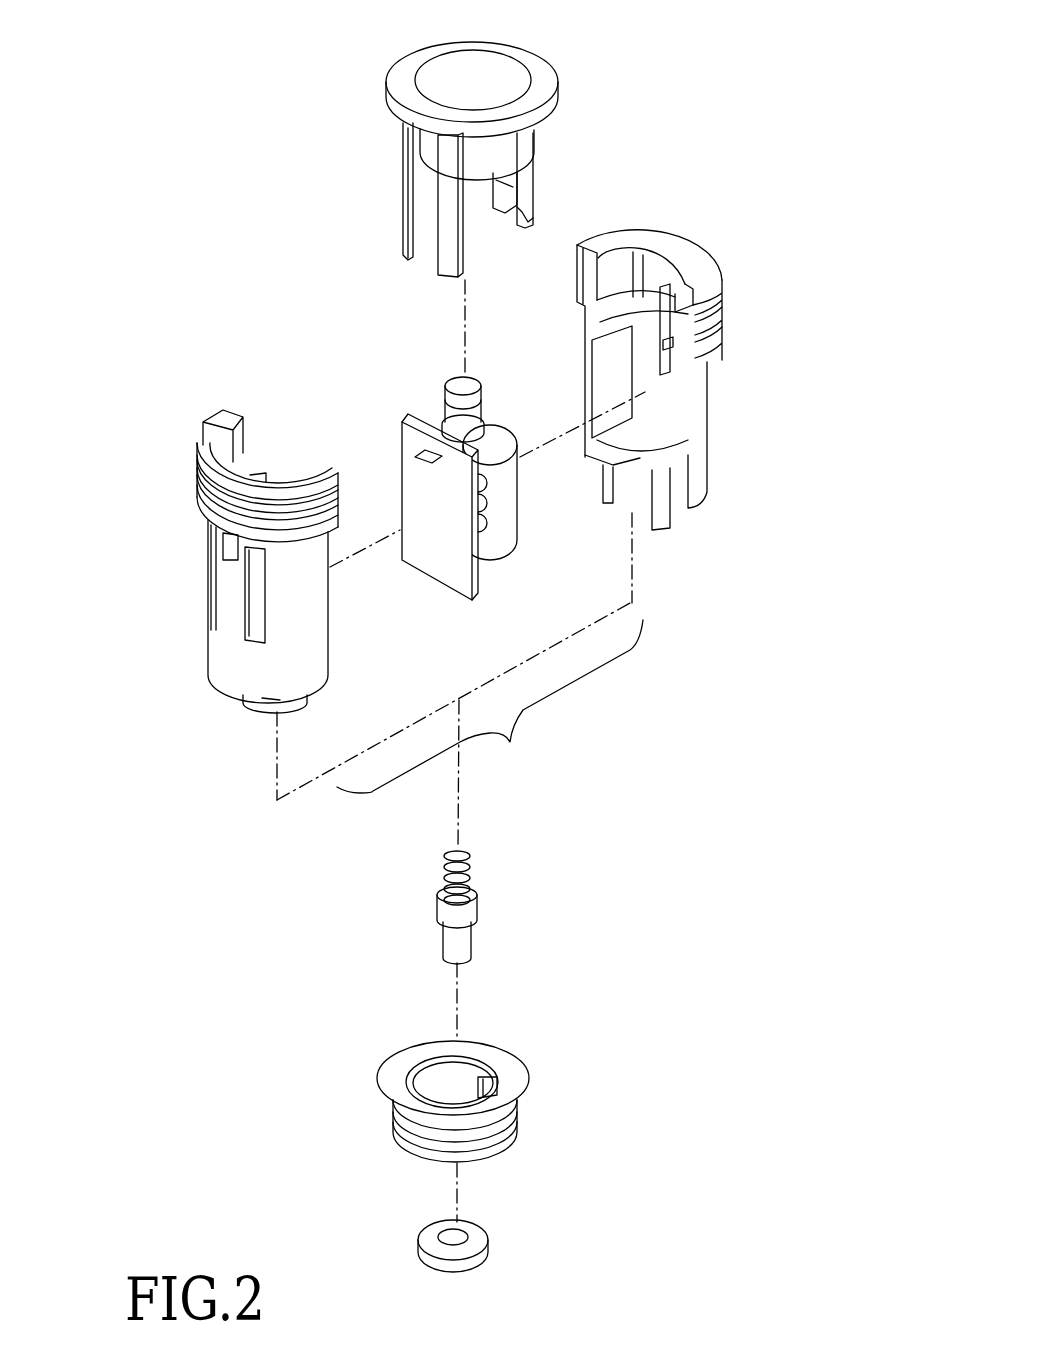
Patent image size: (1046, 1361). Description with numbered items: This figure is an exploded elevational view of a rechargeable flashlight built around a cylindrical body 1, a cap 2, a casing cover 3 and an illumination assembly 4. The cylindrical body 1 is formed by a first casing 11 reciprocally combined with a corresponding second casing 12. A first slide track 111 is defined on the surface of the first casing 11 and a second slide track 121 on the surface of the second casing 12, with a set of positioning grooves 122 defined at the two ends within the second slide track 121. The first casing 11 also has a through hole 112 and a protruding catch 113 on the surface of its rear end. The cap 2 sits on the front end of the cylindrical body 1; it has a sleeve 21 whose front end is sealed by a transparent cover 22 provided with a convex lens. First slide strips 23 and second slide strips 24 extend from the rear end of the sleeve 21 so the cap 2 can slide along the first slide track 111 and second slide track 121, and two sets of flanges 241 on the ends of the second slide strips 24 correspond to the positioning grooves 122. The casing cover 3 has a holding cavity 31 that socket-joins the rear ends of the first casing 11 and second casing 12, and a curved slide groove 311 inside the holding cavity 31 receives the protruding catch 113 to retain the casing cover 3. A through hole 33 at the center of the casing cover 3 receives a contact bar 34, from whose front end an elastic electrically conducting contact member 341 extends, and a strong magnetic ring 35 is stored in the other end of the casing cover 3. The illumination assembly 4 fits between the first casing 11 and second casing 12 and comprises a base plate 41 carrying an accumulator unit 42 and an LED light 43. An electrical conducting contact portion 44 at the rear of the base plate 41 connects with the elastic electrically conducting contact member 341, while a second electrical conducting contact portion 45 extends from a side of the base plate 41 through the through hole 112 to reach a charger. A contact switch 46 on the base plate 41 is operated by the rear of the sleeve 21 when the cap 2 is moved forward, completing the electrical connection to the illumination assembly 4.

The cylindrical body 1 is at (452, 515).
The first casing 11 is at (219, 578).
The first slide track 111 is at (258, 602).
The through hole 112 is at (233, 548).
The protruding catch 113 is at (267, 700).
The second casing 12 is at (691, 380).
The second slide track 121 is at (693, 328).
The positioning grooves 122 is at (680, 345).
The cap 2 is at (488, 151).
The sleeve 21 is at (515, 145).
The transparent cover 22 is at (492, 72).
The first slide strips 23 is at (406, 212).
The second slide strips 24 is at (511, 178).
The flanges 241 is at (528, 215).
The casing cover 3 is at (462, 1069).
The holding cavity 31 is at (470, 1075).
The curved slide groove 311 is at (490, 1093).
The through hole 33 is at (452, 1103).
The contact bar 34 is at (496, 888).
The elastic electrically conducting contact member 341 is at (468, 855).
The strong magnetic ring 35 is at (477, 1230).
The illumination assembly 4 is at (446, 505).
The base plate 41 is at (438, 562).
The accumulator unit 42 is at (503, 532).
The LED light 43 is at (466, 393).
The electrical conducting contact portion 44 is at (477, 560).
The second electrical conducting contact portion 45 is at (424, 457).
The contact switch 46 is at (441, 420).